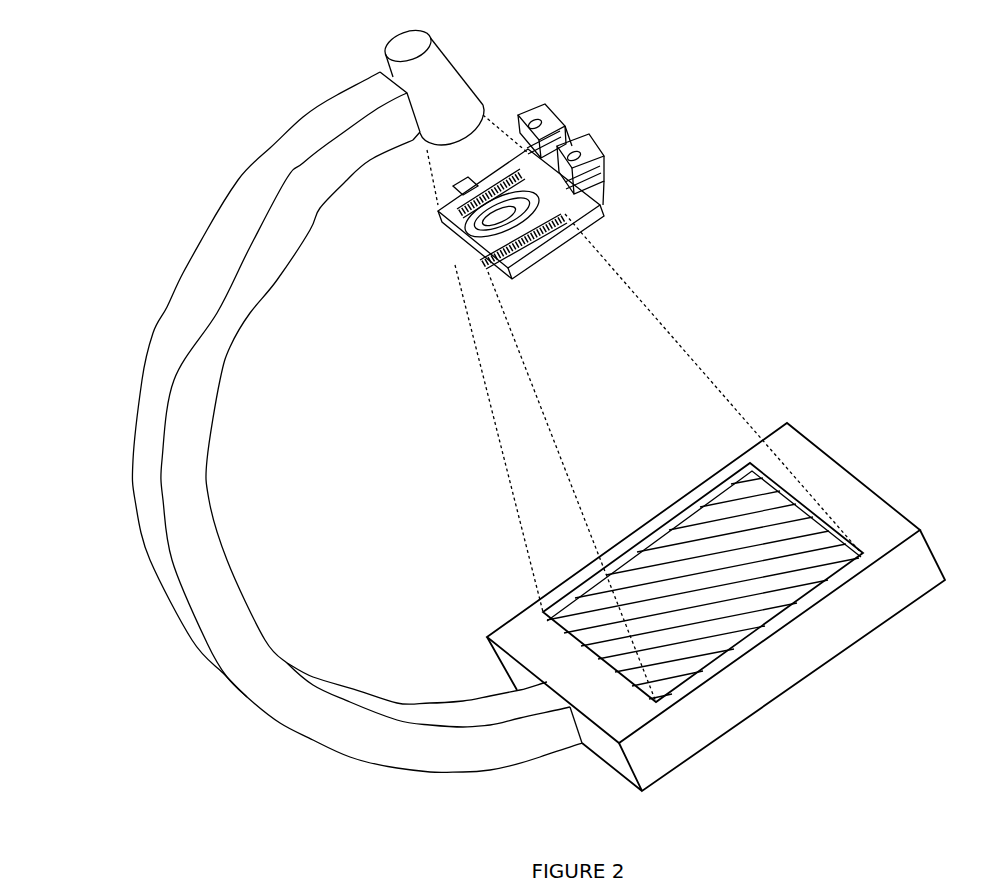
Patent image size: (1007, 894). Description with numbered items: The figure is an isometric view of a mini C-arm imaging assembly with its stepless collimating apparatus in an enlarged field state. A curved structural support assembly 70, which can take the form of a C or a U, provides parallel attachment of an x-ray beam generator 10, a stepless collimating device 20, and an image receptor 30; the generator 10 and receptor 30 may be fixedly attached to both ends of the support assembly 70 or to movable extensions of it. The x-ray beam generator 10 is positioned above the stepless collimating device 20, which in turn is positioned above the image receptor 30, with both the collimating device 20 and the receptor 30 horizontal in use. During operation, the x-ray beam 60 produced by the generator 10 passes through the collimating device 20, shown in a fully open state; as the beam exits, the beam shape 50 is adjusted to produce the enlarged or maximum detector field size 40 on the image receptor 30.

The x-ray beam generator 10 is at (433, 70).
The stepless collimating device 20 is at (604, 194).
The image receptor 30 is at (823, 491).
The detector field size 40 is at (743, 607).
The beam shape 50 is at (523, 458).
The x-ray beam 60 is at (437, 164).
The curved structural support assembly 70 is at (143, 427).